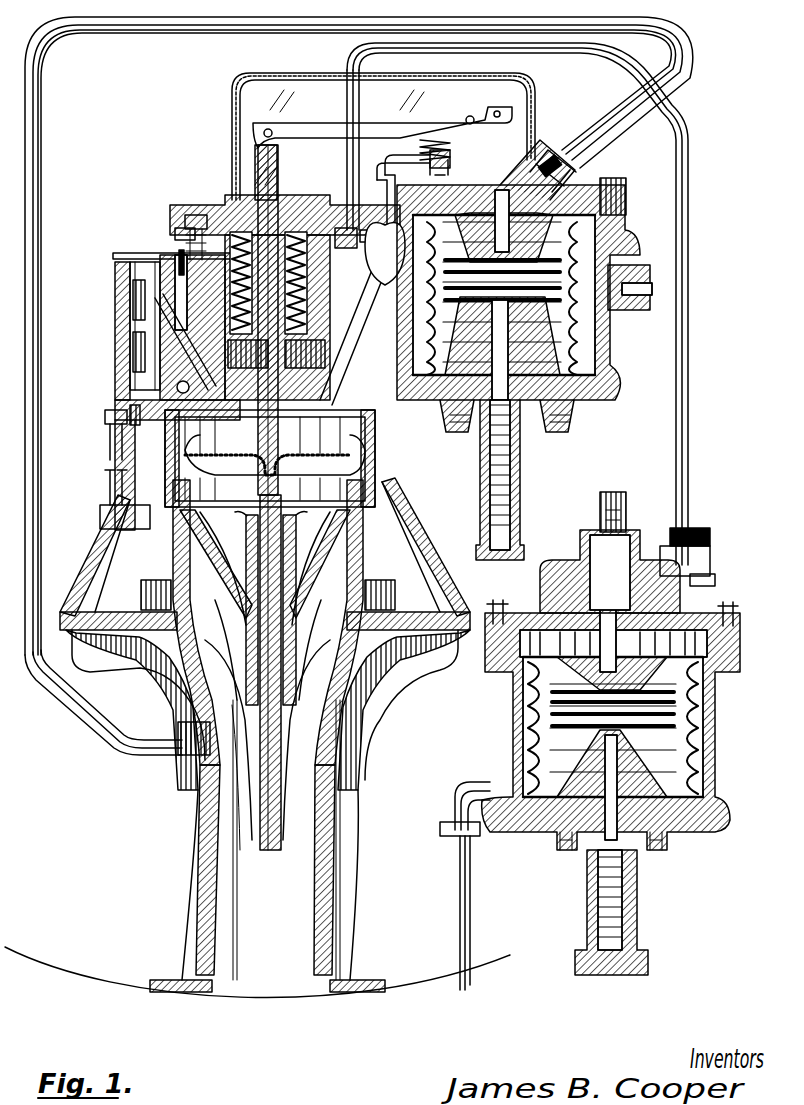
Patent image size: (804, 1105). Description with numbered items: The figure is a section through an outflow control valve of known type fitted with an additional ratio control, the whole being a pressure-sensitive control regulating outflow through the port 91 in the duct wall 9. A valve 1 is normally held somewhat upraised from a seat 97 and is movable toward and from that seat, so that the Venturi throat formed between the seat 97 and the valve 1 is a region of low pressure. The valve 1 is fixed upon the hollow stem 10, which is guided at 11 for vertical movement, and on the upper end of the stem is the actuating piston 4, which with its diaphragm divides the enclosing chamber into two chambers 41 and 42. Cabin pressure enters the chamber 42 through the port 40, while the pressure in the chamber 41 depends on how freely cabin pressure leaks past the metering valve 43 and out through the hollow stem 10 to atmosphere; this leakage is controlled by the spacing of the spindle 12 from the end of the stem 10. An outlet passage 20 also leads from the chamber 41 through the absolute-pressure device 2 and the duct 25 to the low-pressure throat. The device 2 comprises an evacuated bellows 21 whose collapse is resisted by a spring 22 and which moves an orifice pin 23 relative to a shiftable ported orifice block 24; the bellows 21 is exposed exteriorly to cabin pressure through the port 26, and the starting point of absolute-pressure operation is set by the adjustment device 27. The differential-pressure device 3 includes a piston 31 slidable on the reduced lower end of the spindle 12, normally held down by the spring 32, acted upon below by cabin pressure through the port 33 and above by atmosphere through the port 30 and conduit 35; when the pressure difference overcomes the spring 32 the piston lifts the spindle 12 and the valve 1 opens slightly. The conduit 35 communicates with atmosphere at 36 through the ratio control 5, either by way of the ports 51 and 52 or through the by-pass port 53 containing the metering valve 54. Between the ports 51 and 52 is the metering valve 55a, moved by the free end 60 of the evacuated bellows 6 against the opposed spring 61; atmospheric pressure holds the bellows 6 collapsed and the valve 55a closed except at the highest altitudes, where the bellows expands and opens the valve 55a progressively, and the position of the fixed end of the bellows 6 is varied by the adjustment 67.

The valve 1 is at (260, 690).
The absolute-pressure device 2 is at (625, 238).
The differential-pressure device 3 is at (228, 205).
The actuating piston 4 is at (128, 442).
The ratio control 5 is at (714, 746).
The evacuated bellows 6 is at (698, 765).
The duct wall 9 is at (55, 962).
The hollow stem 10 is at (265, 660).
The guide 11 is at (284, 530).
The spindle 12 is at (280, 425).
The outlet passage 20 is at (362, 314).
The evacuated bellows 21 is at (614, 228).
The spring 22 is at (585, 345).
The orifice pin 23 is at (540, 140).
The orifice block 24 is at (535, 100).
The duct 25 is at (41, 168).
The port 26 is at (652, 295).
The adjustment device 27 is at (522, 480).
The port 30 is at (340, 228).
The piston 31 is at (160, 296).
The spring 32 is at (196, 225).
The port 33 is at (133, 345).
The conduit 35 is at (688, 360).
The atmosphere connection 36 is at (470, 890).
The port 40 is at (100, 518).
The chamber 41 is at (270, 458).
The chamber 42 is at (262, 494).
The metering valve 43 is at (115, 410).
The port 51 is at (650, 522).
The port 52 is at (552, 592).
The by-pass port 53 is at (695, 548).
The metering valve 54 is at (706, 576).
The metering valve 55a is at (545, 518).
The free end of bellows 60 is at (628, 658).
The spring 61 is at (698, 700).
The adjustment 67 is at (640, 920).
The port 91 is at (268, 988).
The seat 97 is at (318, 715).